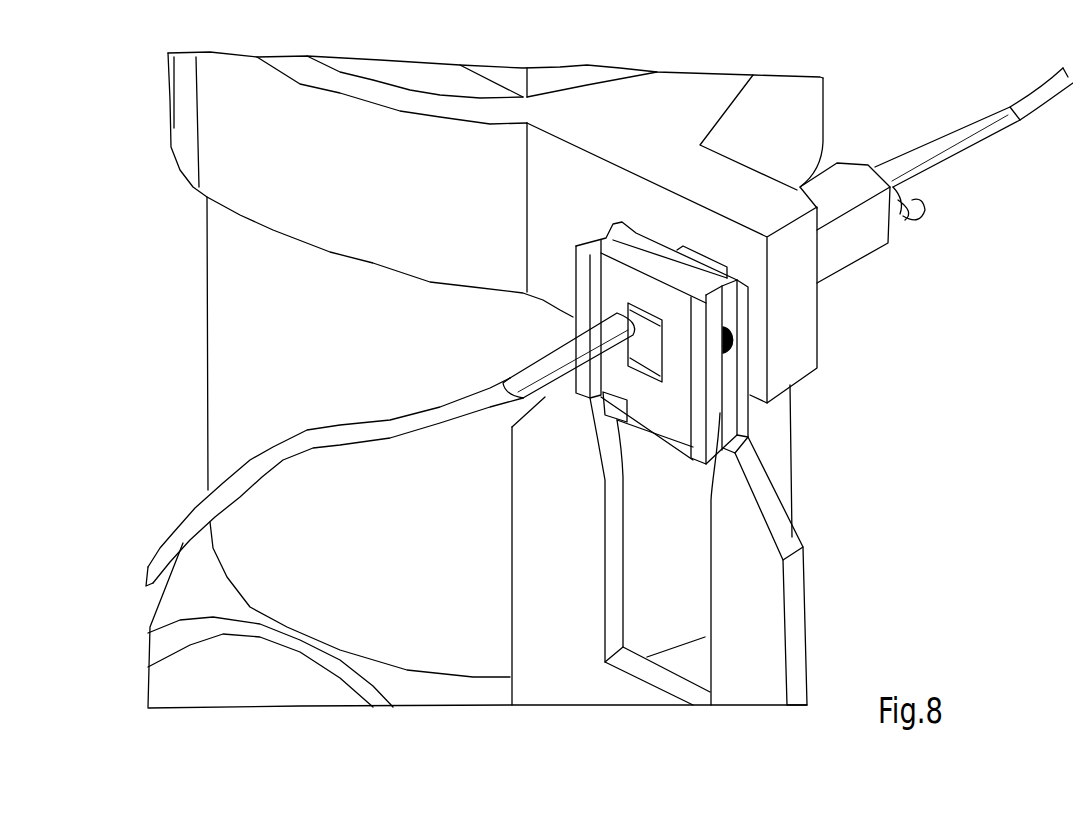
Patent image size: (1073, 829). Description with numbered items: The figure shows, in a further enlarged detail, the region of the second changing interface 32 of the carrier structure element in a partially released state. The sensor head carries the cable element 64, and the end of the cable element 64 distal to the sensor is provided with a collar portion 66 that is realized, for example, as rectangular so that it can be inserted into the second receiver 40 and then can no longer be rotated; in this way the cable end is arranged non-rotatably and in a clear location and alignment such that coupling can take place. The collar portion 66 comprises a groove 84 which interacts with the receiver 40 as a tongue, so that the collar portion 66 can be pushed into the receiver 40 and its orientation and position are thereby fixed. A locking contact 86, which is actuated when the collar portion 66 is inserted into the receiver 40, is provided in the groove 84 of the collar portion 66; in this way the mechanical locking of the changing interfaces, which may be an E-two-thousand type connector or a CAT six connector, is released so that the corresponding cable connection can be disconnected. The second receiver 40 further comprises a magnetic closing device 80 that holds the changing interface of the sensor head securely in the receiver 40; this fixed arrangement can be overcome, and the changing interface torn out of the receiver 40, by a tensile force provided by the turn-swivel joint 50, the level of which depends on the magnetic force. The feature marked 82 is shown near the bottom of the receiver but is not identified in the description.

The turn-swivel joint 50 is at (768, 122).
The second changing interface 32 is at (877, 237).
The cable element 64 is at (167, 547).
The collar portion 66 is at (743, 318).
The groove 84 is at (732, 413).
The locking contact 86 is at (732, 363).
The second receiver 40 is at (683, 578).
The magnetic closing device 80 is at (627, 703).
The channel floor 82 is at (675, 683).